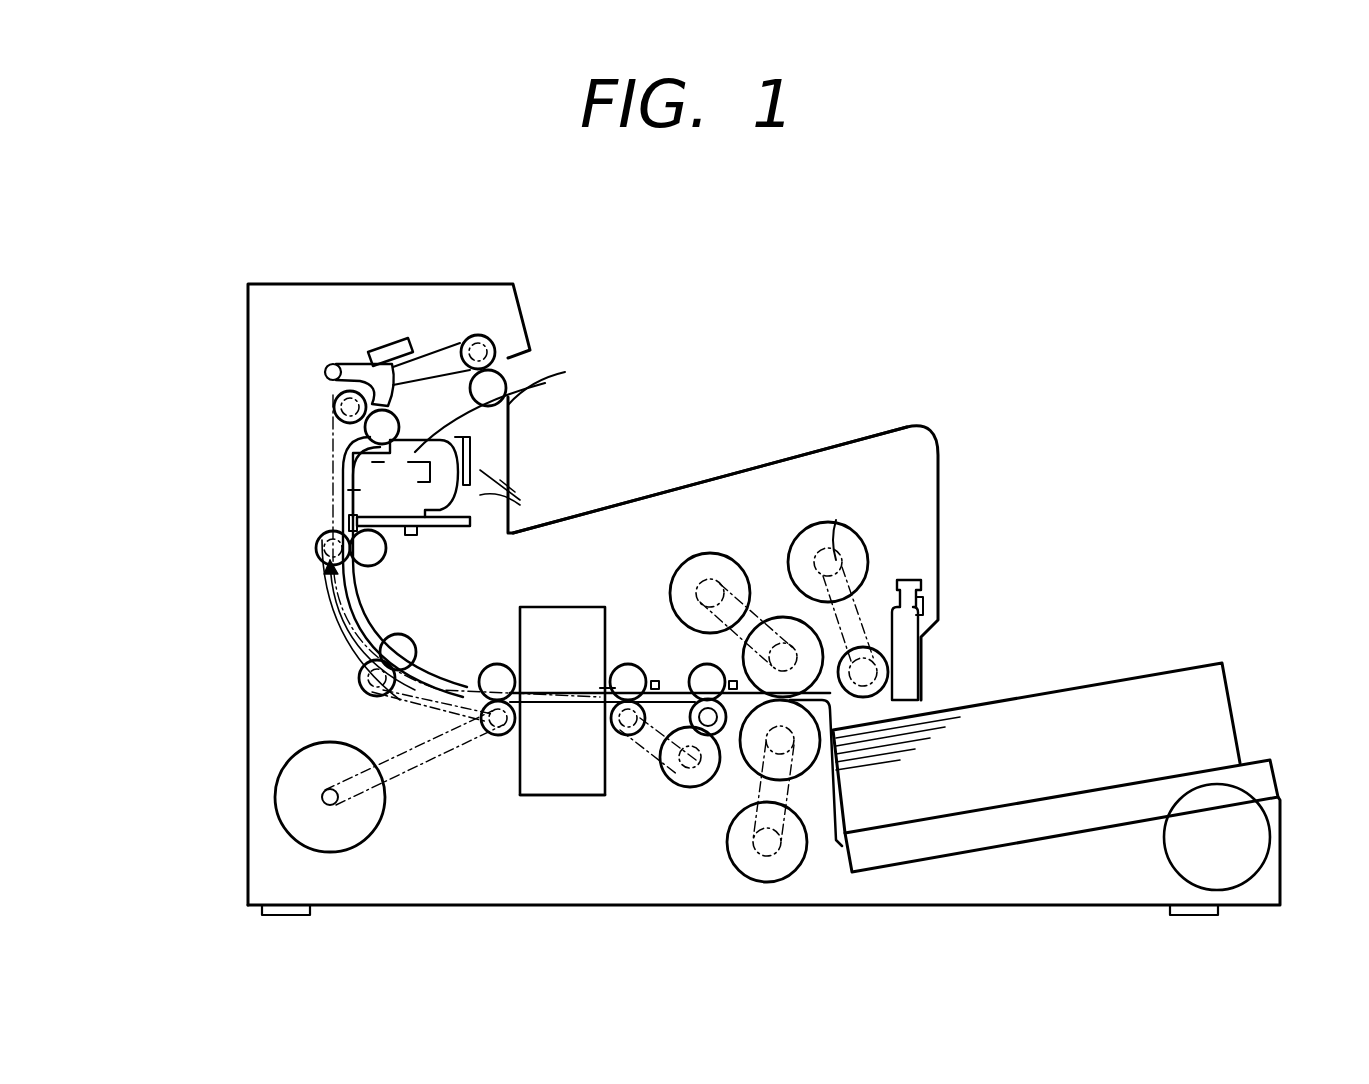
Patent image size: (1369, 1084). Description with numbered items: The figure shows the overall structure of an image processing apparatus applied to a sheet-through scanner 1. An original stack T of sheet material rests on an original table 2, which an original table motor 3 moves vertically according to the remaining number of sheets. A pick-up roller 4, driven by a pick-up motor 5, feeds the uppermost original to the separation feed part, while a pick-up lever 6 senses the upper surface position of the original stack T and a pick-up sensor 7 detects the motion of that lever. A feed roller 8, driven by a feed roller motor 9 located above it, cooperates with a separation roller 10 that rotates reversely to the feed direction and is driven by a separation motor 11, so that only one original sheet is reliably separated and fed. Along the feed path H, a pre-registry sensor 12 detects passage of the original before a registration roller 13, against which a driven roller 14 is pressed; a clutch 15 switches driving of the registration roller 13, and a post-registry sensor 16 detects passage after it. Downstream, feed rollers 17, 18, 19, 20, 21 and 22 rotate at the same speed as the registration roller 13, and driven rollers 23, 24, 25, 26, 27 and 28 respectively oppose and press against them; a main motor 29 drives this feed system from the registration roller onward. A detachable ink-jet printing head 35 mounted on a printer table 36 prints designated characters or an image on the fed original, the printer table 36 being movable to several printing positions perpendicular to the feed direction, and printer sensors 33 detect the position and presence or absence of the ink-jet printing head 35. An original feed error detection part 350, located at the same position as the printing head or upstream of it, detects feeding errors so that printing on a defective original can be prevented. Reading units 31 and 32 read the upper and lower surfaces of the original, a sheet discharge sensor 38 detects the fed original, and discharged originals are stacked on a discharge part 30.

The sheet-through scanner 1 is at (728, 274).
The original table 2 is at (1258, 775).
The original table motor 3 is at (1250, 835).
The pick-up roller 4 is at (885, 592).
The pick-up motor 5 is at (850, 538).
The pick-up lever 6 is at (905, 670).
The pick-up sensor 7 is at (912, 578).
The feed roller 8 is at (780, 617).
The feed roller motor 9 is at (712, 555).
The separation roller 10 is at (800, 765).
The separation motor 11 is at (768, 870).
The pre-registry sensor 12 is at (700, 664).
The registration roller 13 is at (715, 737).
The driven roller 14 is at (655, 680).
The clutch 15 is at (690, 790).
The post-registry sensor 16 is at (624, 664).
The feed roller 17 is at (629, 736).
The feed roller 18 is at (500, 736).
The feed roller 19 is at (360, 700).
The feed roller 20 is at (318, 549).
The feed roller 21 is at (337, 400).
The feed roller 22 is at (472, 335).
The driven roller 23 is at (606, 688).
The driven roller 24 is at (484, 700).
The driven roller 25 is at (358, 670).
The driven roller 26 is at (364, 556).
The driven roller 27 is at (365, 432).
The driven roller 28 is at (503, 372).
The main motor 29 is at (295, 800).
The discharge part 30 is at (860, 455).
The reading unit 31 is at (555, 668).
The reading unit 32 is at (567, 800).
The printer sensor 33 is at (390, 645).
The ink-jet printing head 35 is at (512, 402).
The printer table 36 is at (360, 478).
The sheet discharge sensor 38 is at (364, 345).
The original feed error detection part 350 is at (355, 520).
The feed path H is at (640, 692).
The original stack T is at (1160, 690).